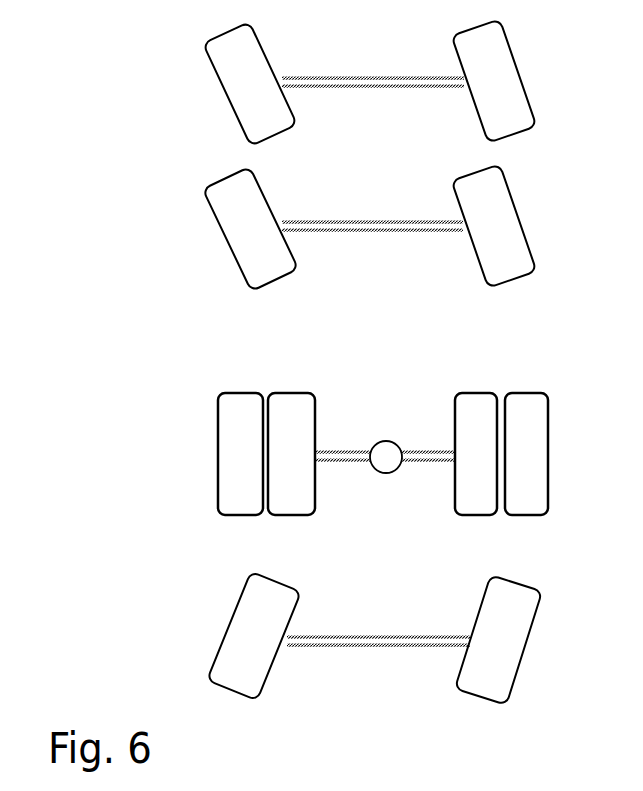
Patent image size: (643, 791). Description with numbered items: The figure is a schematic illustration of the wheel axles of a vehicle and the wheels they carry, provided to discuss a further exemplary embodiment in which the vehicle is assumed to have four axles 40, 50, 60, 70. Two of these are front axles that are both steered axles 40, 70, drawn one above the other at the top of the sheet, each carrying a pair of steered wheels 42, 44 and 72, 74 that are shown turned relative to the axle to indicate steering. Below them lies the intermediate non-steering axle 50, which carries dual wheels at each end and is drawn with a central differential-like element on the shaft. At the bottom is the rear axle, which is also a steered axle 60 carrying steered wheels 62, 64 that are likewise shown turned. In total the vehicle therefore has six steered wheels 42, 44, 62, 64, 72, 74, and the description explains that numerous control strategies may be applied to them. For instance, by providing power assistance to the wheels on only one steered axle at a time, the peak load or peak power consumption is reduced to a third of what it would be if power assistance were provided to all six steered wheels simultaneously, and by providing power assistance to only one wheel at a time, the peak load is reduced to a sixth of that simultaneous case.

The front steered axle 40 is at (355, 91).
The steered wheel 42 is at (221, 87).
The steered wheel 44 is at (529, 89).
The intermediate non-steering axle 50 is at (413, 462).
The rear steered axle 60 is at (375, 636).
The steered wheel 62 is at (222, 643).
The steered wheel 64 is at (539, 587).
The front steered axle 70 is at (367, 232).
The steered wheel 72 is at (222, 237).
The steered wheel 74 is at (522, 215).